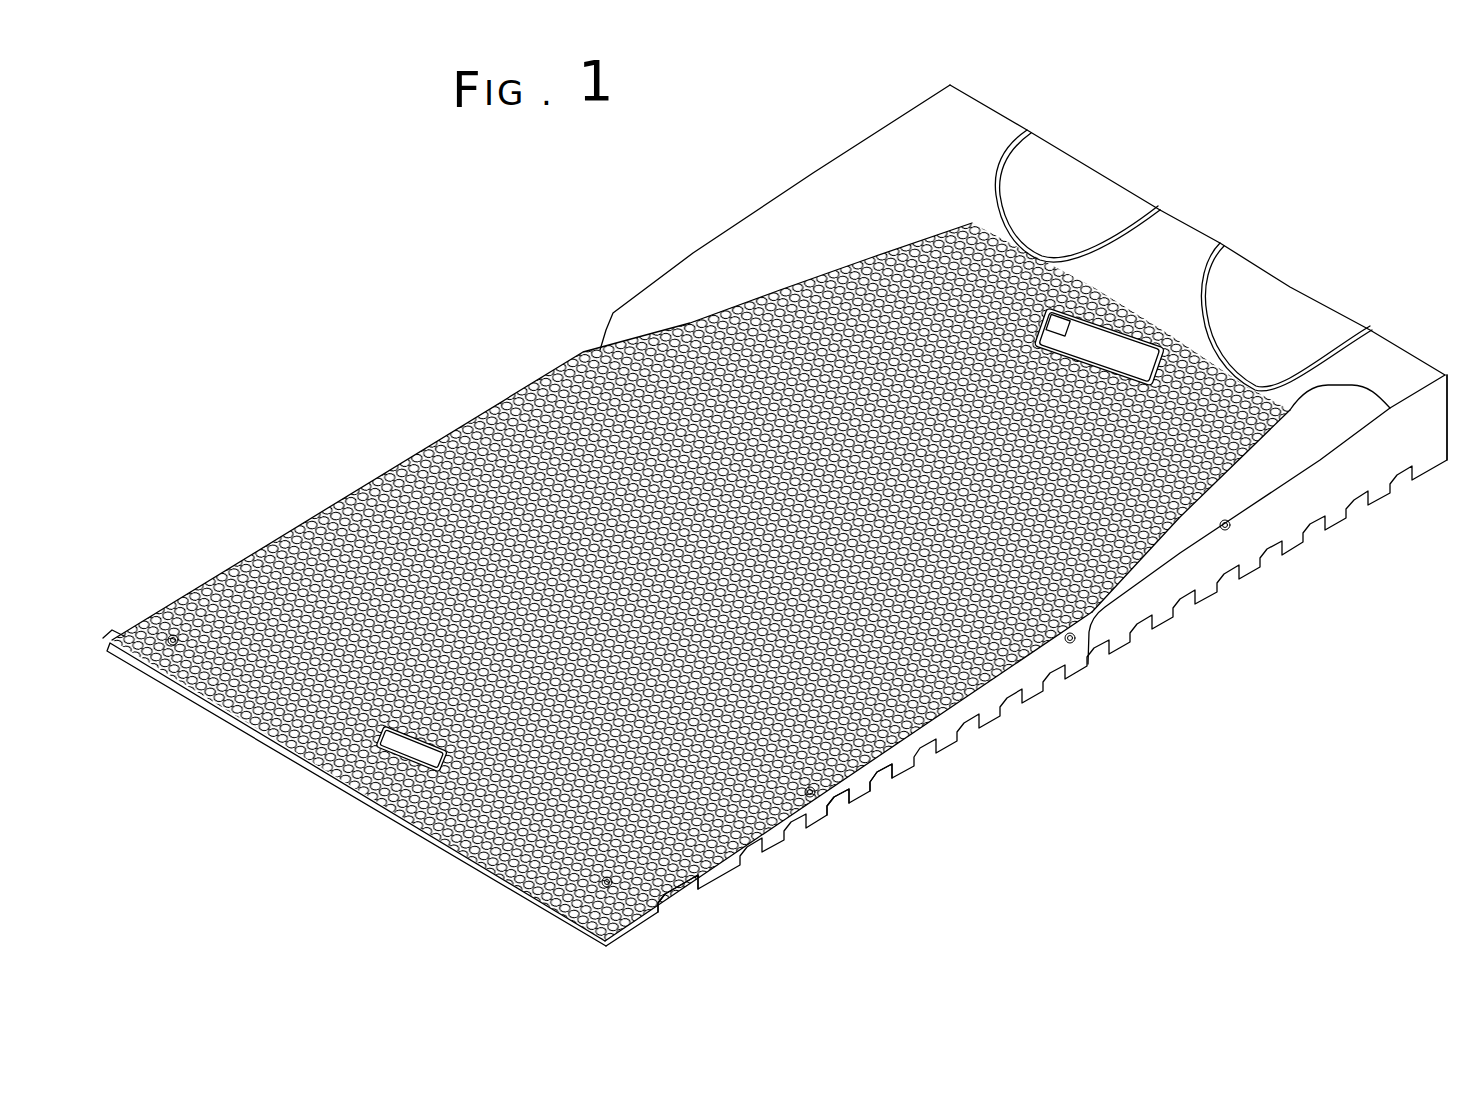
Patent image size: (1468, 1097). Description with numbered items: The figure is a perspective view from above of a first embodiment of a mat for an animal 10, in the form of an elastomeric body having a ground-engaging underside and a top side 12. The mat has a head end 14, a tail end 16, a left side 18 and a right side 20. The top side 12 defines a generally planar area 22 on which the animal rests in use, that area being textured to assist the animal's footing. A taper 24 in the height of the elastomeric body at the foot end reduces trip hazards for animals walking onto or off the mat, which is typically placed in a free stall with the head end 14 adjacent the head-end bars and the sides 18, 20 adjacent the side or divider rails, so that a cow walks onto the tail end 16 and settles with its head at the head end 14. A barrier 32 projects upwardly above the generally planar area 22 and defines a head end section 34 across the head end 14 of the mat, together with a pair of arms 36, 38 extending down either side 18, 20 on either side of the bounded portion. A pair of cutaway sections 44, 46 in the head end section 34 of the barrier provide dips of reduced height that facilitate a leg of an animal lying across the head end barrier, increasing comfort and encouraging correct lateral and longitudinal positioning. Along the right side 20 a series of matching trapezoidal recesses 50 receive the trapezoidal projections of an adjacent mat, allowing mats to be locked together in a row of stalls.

The mat for an animal 10 is at (712, 160).
The top side 12 is at (508, 415).
The head end 14 is at (1216, 220).
The tail end 16 is at (305, 790).
The left side 18 is at (400, 447).
The right side 20 is at (1000, 741).
The generally planar area 22 is at (347, 523).
The taper 24 is at (653, 893).
The barrier 32 is at (988, 122).
The head end section 34 is at (1212, 255).
The arm 36 is at (800, 205).
The arm 38 is at (1220, 508).
The cutaway section 44 is at (1088, 185).
The cutaway section 46 is at (1298, 323).
The trapezoidal recesses 50 is at (795, 828).